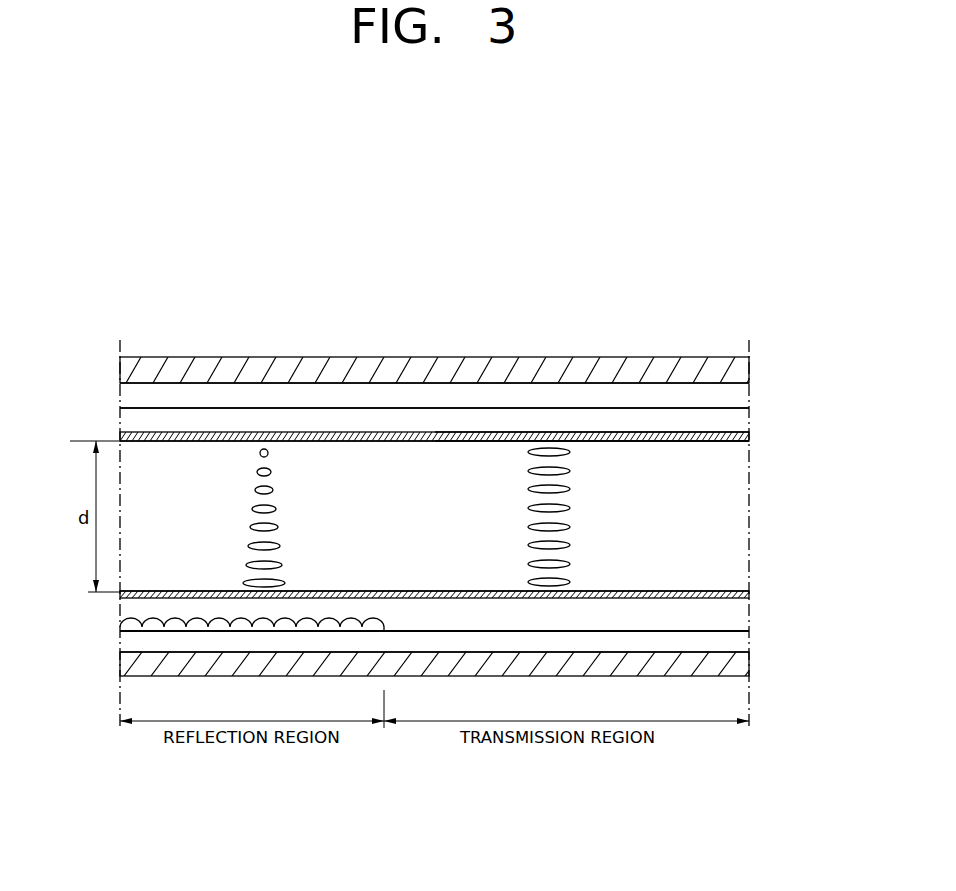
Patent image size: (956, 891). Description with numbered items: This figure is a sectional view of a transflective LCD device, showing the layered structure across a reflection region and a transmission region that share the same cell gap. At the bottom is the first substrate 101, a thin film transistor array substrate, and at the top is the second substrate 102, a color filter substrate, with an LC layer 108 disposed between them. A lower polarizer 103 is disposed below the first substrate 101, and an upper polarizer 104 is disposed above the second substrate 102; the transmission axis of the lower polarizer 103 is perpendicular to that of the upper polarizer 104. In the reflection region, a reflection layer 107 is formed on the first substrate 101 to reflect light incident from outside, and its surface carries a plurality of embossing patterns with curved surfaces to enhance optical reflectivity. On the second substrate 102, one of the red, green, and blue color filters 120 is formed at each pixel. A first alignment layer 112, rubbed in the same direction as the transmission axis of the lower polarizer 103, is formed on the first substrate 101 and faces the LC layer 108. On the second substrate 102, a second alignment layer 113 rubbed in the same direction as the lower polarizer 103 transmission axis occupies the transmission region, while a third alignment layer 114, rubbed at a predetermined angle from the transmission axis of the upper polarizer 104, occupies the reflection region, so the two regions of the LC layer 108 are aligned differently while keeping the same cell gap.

The first substrate 101 is at (130, 643).
The second substrate 102 is at (130, 397).
The lower polarizer 103 is at (130, 661).
The upper polarizer 104 is at (130, 370).
The reflection layer 107 is at (130, 623).
The LC layer 108 is at (735, 508).
The first alignment layer 112 is at (750, 589).
The second alignment layer 113 is at (750, 436).
The third alignment layer 114 is at (120, 437).
The color filters 120 is at (130, 422).